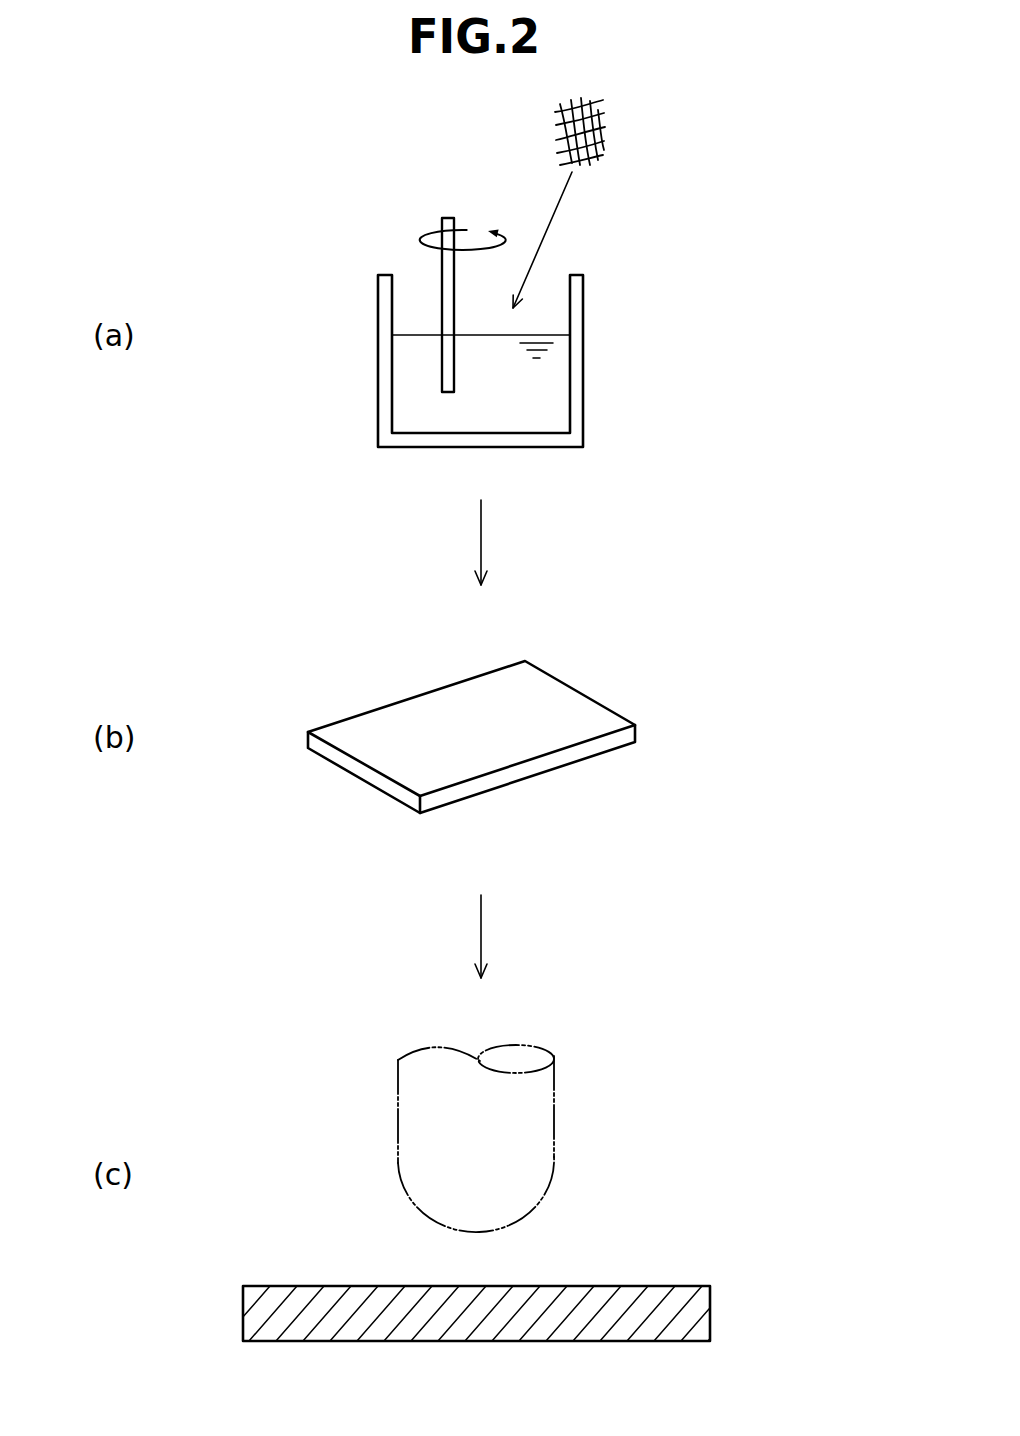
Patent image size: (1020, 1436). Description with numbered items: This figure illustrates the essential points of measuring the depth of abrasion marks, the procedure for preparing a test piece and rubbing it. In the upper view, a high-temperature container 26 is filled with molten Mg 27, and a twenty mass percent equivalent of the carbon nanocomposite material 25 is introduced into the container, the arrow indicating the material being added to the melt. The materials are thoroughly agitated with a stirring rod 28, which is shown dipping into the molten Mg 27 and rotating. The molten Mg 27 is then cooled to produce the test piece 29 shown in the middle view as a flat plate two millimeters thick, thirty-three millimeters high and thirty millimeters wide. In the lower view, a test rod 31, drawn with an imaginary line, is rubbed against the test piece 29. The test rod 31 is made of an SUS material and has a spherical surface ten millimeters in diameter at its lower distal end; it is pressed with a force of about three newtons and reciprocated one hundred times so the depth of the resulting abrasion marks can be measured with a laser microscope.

The carbon nanocomposite material 25 is at (600, 142).
The high-temperature container 26 is at (388, 396).
The molten Mg 27 is at (548, 400).
The stirring rod 28 is at (448, 218).
The test piece 29 is at (592, 695).
The test rod 31 is at (555, 1108).